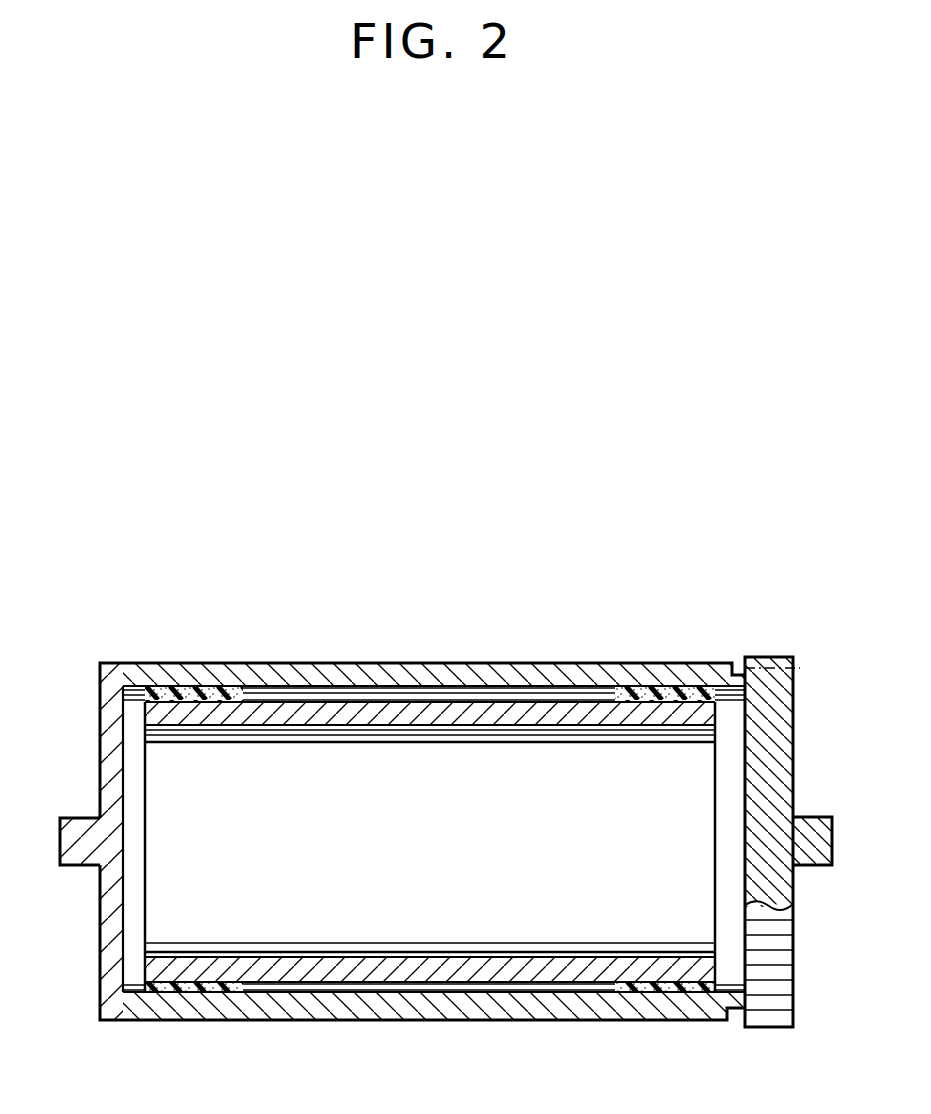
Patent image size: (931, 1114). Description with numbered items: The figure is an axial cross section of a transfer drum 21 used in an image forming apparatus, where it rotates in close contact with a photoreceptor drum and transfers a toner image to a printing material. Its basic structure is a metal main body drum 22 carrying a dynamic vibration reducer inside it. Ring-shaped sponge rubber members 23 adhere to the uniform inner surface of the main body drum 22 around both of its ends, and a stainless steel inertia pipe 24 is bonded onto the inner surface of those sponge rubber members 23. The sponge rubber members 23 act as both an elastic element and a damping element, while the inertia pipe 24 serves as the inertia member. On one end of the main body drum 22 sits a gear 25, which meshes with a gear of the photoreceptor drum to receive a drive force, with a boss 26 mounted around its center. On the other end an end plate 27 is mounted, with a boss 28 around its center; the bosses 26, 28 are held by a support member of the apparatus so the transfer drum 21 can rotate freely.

The transfer drum 21 is at (195, 553).
The main body drum 22 is at (455, 680).
The sponge rubber members 23 is at (176, 692).
The inertia pipe 24 is at (328, 705).
The gear 25 is at (763, 660).
The boss 26 is at (815, 818).
The end plate 27 is at (102, 922).
The boss 28 is at (72, 818).